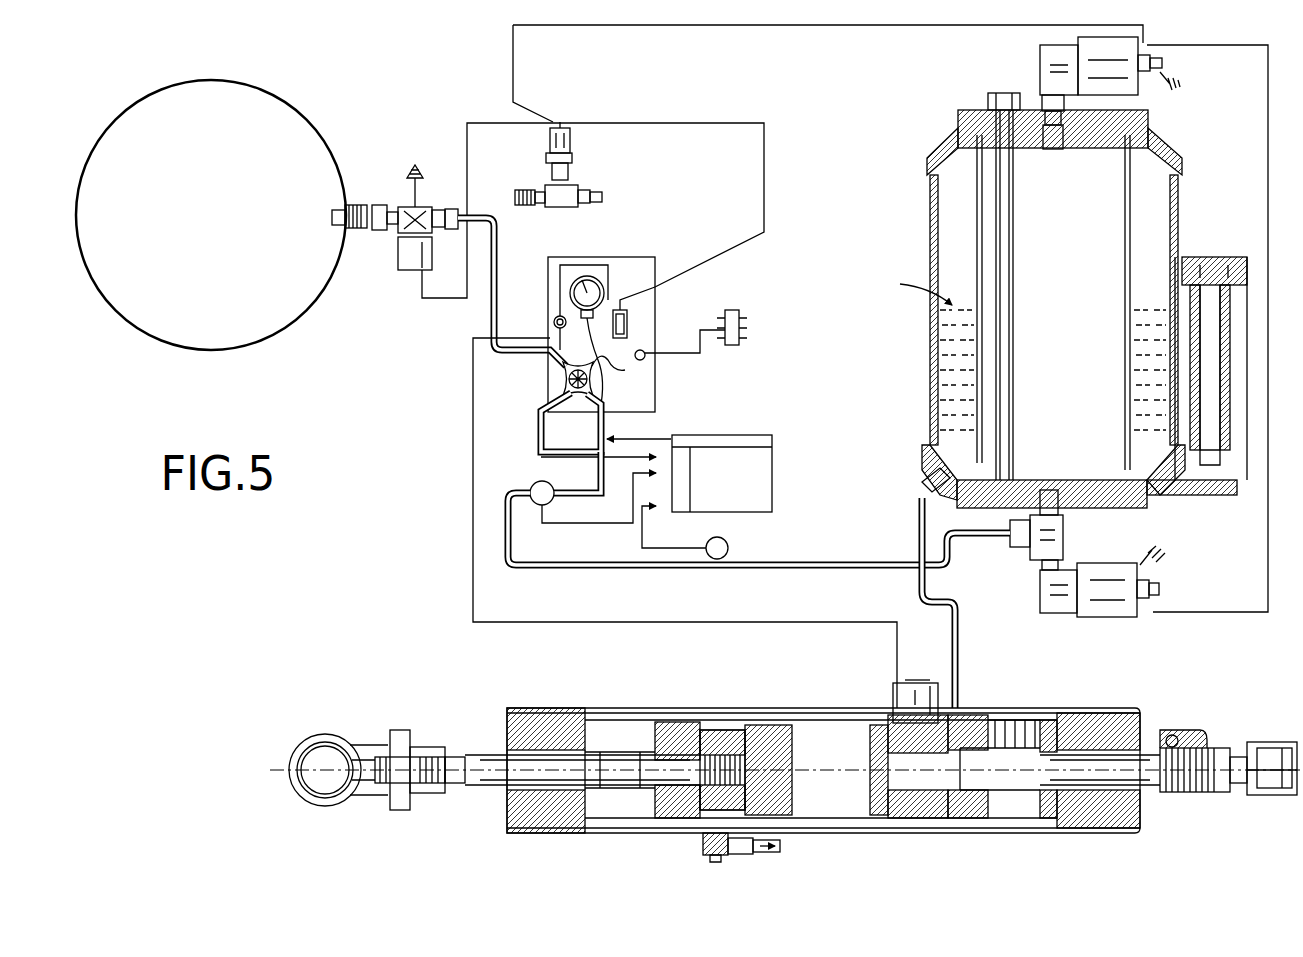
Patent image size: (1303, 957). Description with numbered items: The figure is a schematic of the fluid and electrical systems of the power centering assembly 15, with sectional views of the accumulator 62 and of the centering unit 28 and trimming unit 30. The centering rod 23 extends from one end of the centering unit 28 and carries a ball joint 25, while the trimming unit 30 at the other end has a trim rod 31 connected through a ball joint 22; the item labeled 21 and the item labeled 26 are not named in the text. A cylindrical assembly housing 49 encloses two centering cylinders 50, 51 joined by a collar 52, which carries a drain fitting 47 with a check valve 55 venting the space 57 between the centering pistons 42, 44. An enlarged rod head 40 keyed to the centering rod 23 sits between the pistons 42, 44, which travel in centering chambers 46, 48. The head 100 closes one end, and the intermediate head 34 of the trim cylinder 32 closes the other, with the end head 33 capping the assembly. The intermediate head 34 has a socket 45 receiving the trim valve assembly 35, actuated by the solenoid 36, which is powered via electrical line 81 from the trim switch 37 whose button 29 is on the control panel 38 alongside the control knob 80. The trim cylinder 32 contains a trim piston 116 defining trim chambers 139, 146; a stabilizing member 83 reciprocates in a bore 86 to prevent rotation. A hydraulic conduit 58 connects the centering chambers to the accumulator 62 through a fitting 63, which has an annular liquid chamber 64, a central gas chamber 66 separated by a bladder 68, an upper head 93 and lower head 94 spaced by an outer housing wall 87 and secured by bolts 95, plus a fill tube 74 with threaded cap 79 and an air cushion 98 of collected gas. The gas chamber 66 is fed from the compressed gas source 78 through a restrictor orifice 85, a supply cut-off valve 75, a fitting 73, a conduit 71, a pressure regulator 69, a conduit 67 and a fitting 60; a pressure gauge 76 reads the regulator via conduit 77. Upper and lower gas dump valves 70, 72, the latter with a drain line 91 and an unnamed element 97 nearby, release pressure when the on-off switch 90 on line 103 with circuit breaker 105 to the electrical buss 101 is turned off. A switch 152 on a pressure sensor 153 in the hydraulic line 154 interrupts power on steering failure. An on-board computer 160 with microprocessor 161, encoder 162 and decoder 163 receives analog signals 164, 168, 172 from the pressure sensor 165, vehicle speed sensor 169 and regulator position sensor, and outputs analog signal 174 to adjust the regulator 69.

The power centering assembly 15 is at (786, 762).
The clevis 21 is at (1205, 735).
The ball joint 22 is at (1270, 742).
The centering rod 23 is at (490, 787).
The ball joint 25 is at (315, 735).
The lock nut 26 is at (420, 730).
The centering unit 28 is at (751, 773).
The button 29 is at (553, 320).
The trimming unit 30 is at (1036, 768).
The trim rod 31 is at (1150, 786).
The trim cylinder 32 is at (1052, 718).
The end head 33 is at (1140, 712).
The intermediate head 34 is at (862, 770).
The trim valve assembly 35 is at (922, 680).
The solenoid 36 is at (900, 700).
The trim switch 37 is at (557, 300).
The control panel 38 is at (644, 257).
The rod head 40 is at (745, 725).
The centering piston 42 is at (655, 722).
The centering piston 44 is at (792, 767).
The socket 45 is at (862, 725).
The centering chamber 46 is at (612, 725).
The drain fitting 47 is at (705, 845).
The centering chamber 48 is at (828, 797).
The assembly housing 49 is at (580, 835).
The centering cylinder 50 is at (655, 835).
The centering cylinder 51 is at (810, 820).
The collar 52 is at (722, 740).
The check valve 55 is at (770, 855).
The space 57 is at (645, 797).
The hydraulic conduit 58 is at (945, 598).
The fitting 60 is at (1065, 545).
The accumulator 62 is at (1067, 286).
The fitting 63 is at (923, 483).
The liquid chamber 64 is at (940, 425).
The gas chamber 66 is at (1053, 302).
The conduit 67 is at (592, 570).
The bladder 68 is at (1128, 418).
The pressure regulator 69 is at (563, 390).
The upper gas dump valve 70 is at (1043, 62).
The conduit 71 is at (491, 325).
The lower gas dump valve 72 is at (1128, 599).
The fitting 73 is at (447, 208).
The fill tube 74 is at (1232, 382).
The supply cut-off valve 75 is at (413, 270).
The pressure gauge 76 is at (572, 276).
The conduit 77 is at (612, 368).
The compressed gas source 78 is at (211, 215).
The threaded cap 79 is at (1217, 338).
The control knob 80 is at (562, 376).
The electrical line 81 is at (472, 440).
The stabilizing member 83 is at (998, 712).
The restrictor orifice 85 is at (378, 205).
The bore 86 is at (1038, 712).
The outer housing wall 87 is at (930, 226).
The on-off switch 90 is at (628, 322).
The drain line 91 is at (1160, 589).
The upper head 93 is at (928, 172).
The lower head 94 is at (1140, 508).
The bolt 95 is at (1013, 220).
The connector 97 is at (1163, 63).
The air cushion 98 is at (1165, 222).
The head 100 is at (510, 712).
The electrical buss 101 is at (735, 310).
The line 103 is at (700, 353).
The circuit breaker 105 is at (645, 358).
The trim piston 116 is at (1045, 825).
The trim chamber 139 is at (990, 835).
The trim chamber 146 is at (1060, 828).
The switch 152 is at (572, 138).
The pressure sensor 153 is at (572, 176).
The hydraulic line 154 is at (560, 208).
The on-board computer 160 is at (760, 444).
The microprocessor 161 is at (773, 462).
The encoder 162 is at (692, 495).
The decoder 163 is at (773, 441).
The analog signal 164 is at (553, 527).
The pressure sensor 165 is at (550, 502).
The analog signal 168 is at (647, 540).
The vehicle speed sensor 169 is at (729, 548).
The analog signal 172 is at (570, 458).
The analog signal 174 is at (662, 437).